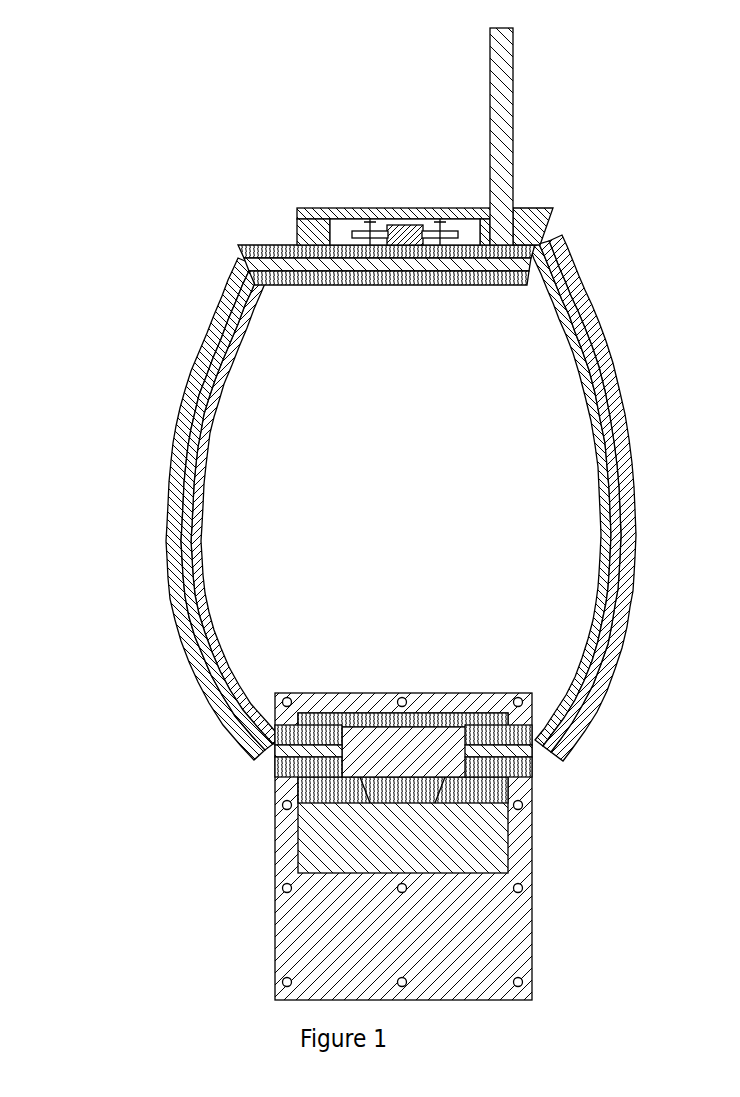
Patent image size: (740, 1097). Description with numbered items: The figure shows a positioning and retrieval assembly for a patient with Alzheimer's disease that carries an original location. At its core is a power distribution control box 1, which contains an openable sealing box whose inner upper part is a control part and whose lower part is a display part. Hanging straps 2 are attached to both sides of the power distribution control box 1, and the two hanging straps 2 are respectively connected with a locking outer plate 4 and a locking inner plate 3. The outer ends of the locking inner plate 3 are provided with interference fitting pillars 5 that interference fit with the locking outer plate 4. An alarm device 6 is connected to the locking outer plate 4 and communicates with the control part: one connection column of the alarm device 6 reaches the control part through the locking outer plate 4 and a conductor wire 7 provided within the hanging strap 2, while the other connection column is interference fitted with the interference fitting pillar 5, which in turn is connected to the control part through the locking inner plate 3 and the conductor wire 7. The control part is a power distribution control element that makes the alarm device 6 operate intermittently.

The power distribution control box 1 is at (287, 848).
The hanging straps 2 is at (178, 413).
The locking inner plate 3 is at (252, 246).
The locking outer plate 4 is at (540, 208).
The interference fitting pillars 5 is at (298, 218).
The alarm device 6 is at (493, 178).
The conductor wire 7 is at (180, 592).